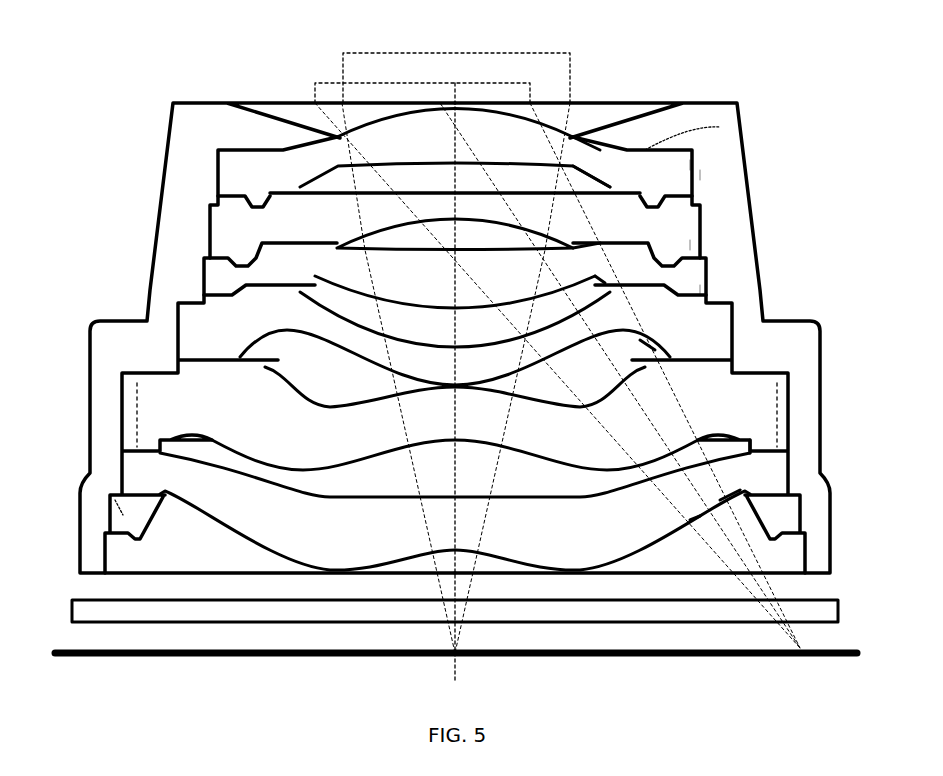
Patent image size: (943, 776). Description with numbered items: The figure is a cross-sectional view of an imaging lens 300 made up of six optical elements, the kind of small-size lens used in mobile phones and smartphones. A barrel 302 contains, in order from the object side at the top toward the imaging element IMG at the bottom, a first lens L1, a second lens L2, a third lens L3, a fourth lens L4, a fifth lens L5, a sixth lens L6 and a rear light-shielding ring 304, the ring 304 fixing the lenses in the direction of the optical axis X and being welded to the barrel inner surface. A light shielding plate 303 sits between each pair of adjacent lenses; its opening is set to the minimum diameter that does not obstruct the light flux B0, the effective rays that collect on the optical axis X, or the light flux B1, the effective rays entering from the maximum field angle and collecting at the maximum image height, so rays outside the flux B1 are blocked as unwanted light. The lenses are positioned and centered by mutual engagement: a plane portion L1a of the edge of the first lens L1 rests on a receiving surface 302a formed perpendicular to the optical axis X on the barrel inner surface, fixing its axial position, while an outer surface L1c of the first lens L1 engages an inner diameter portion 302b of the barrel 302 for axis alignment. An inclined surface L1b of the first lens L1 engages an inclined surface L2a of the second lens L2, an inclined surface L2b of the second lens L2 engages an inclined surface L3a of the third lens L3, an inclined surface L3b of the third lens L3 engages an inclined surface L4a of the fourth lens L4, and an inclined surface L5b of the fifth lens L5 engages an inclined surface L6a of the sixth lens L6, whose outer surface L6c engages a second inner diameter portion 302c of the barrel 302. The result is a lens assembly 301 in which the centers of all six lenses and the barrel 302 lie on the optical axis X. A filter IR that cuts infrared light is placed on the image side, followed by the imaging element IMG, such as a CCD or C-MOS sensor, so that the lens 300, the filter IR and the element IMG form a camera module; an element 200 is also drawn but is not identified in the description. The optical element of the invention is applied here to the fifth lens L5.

The imaging lens 300 is at (451, 355).
The lens assembly 301 is at (555, 74).
The barrel 302 is at (710, 118).
The receiving surface 302a is at (720, 127).
The inner diameter portion 302b is at (702, 172).
The inner diameter portion 302c is at (790, 482).
The light shielding plate 303 is at (293, 267).
The rear light-shielding ring 304 is at (115, 497).
The adhesive 200 is at (792, 400).
The first lens L1 is at (426, 148).
The plane portion L1a is at (690, 166).
The inclined surface L1b is at (598, 172).
The outer surface L1c is at (598, 158).
The second lens L2 is at (402, 234).
The inclined surface L2a is at (600, 228).
The inclined surface L2b is at (695, 244).
The third lens L3 is at (413, 307).
The inclined surface L3a is at (600, 284).
The inclined surface L3b is at (705, 288).
The fourth lens L4 is at (435, 367).
The inclined surface L4a is at (663, 300).
The fifth lens L5 is at (455, 446).
The inclined surface L5b is at (758, 442).
The sixth lens L6 is at (455, 518).
The inclined surface L6a is at (740, 470).
The outer surface L6c is at (700, 518).
The filter IR is at (125, 610).
The imaging element IMG is at (130, 648).
The light flux B0 is at (456, 72).
The light flux B1 is at (422, 86).
The optical axis X is at (440, 103).